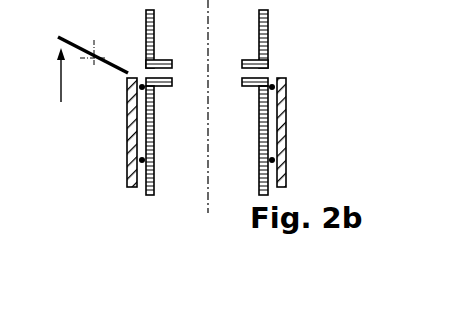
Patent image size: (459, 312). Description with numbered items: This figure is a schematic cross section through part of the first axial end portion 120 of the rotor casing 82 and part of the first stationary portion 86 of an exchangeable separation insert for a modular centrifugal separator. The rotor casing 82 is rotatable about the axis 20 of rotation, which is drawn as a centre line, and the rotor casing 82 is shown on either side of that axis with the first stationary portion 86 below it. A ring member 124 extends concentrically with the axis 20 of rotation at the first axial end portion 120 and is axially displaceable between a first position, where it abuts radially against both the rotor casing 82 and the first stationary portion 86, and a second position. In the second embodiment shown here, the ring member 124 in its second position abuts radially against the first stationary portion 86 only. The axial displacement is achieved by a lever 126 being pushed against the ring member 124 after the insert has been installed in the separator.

The axis of rotation 20 is at (208, 197).
The rotor casing 82 is at (265, 27).
The first stationary portion 86 is at (262, 182).
The first axial end portion 120 is at (286, 48).
The ring member 124 is at (280, 125).
The lever 126 is at (107, 68).